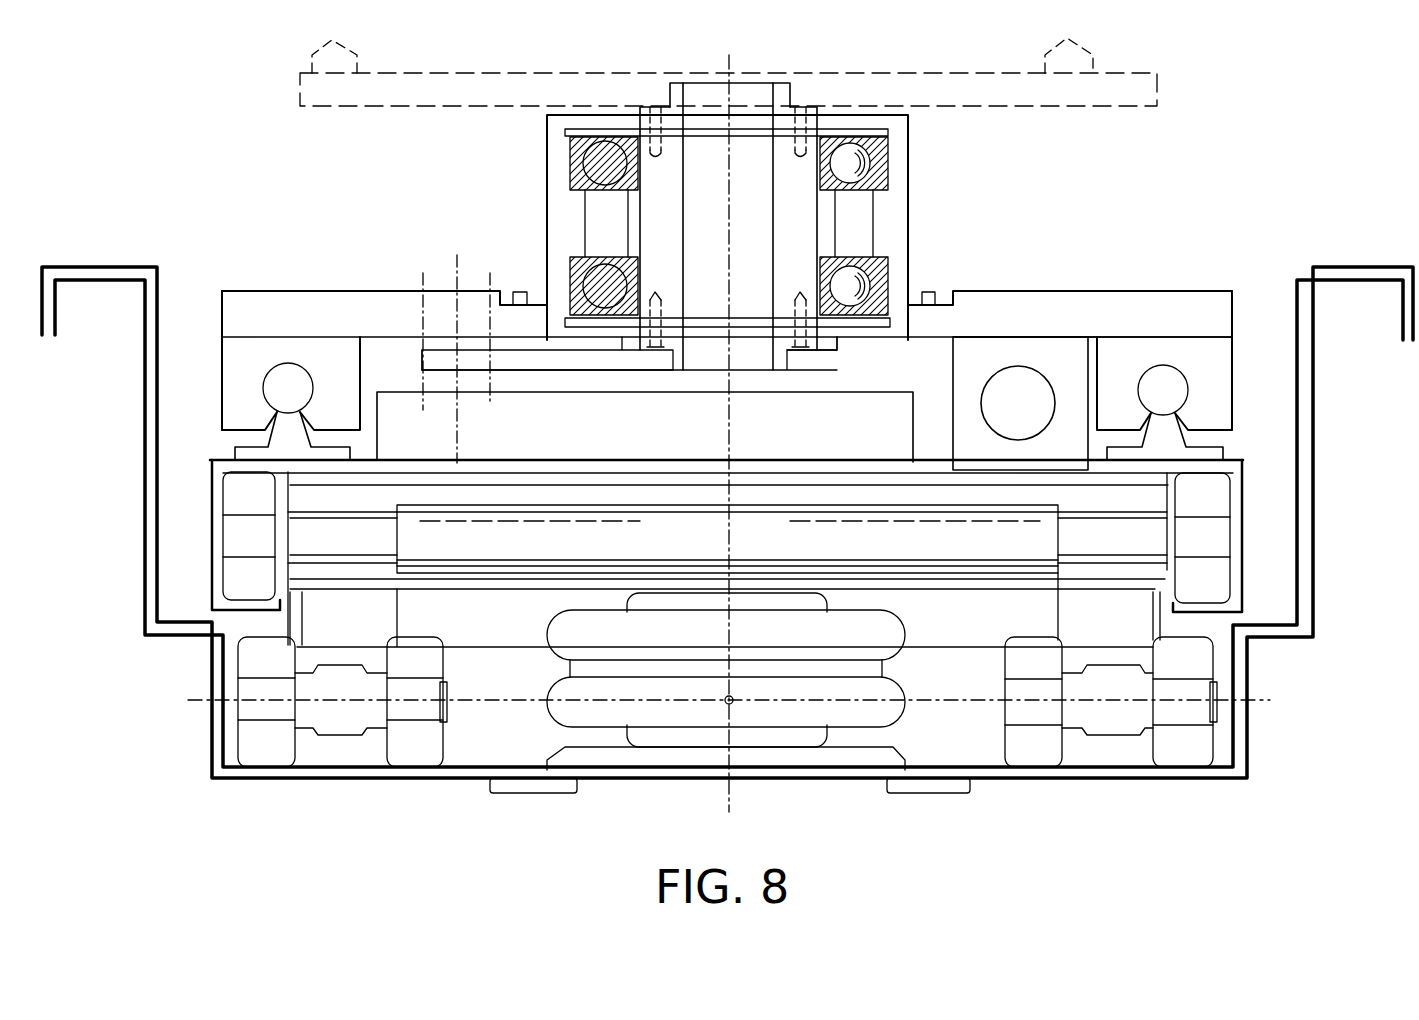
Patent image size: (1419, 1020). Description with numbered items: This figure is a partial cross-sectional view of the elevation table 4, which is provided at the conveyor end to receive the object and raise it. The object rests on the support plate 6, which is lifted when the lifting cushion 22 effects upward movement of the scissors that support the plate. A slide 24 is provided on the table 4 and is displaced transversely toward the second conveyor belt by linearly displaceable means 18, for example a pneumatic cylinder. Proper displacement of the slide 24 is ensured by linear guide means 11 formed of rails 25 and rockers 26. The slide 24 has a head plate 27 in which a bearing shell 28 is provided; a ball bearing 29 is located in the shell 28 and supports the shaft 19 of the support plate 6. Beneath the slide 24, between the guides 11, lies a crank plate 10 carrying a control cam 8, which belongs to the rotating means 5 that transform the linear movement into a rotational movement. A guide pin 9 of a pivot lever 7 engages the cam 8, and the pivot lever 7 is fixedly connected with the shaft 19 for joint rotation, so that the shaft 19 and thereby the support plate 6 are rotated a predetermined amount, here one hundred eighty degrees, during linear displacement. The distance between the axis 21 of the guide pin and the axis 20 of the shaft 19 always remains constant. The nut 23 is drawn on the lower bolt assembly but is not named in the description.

The elevation table 4 is at (352, 791).
The rotating means 5 is at (549, 383).
The support plate 6 is at (1057, 104).
The pivot lever 7 is at (822, 365).
The control cam 8 is at (490, 406).
The guide pin 9 is at (422, 388).
The crank plate 10 is at (824, 443).
The linear guide means 11 is at (1235, 340).
The linearly displaceable means 18 is at (1018, 380).
The shaft 19 is at (770, 221).
The axis of the shaft 20 is at (727, 213).
The axis of the guide pin 21 is at (457, 258).
The lifting cushion 22 is at (802, 737).
The nut 23 is at (1020, 758).
The slide 24 is at (1242, 270).
The rails 25 is at (1220, 451).
The rockers 26 is at (1225, 373).
The head plate 27 is at (1202, 303).
The bearing shell 28 is at (897, 220).
The ball bearing 29 is at (883, 158).